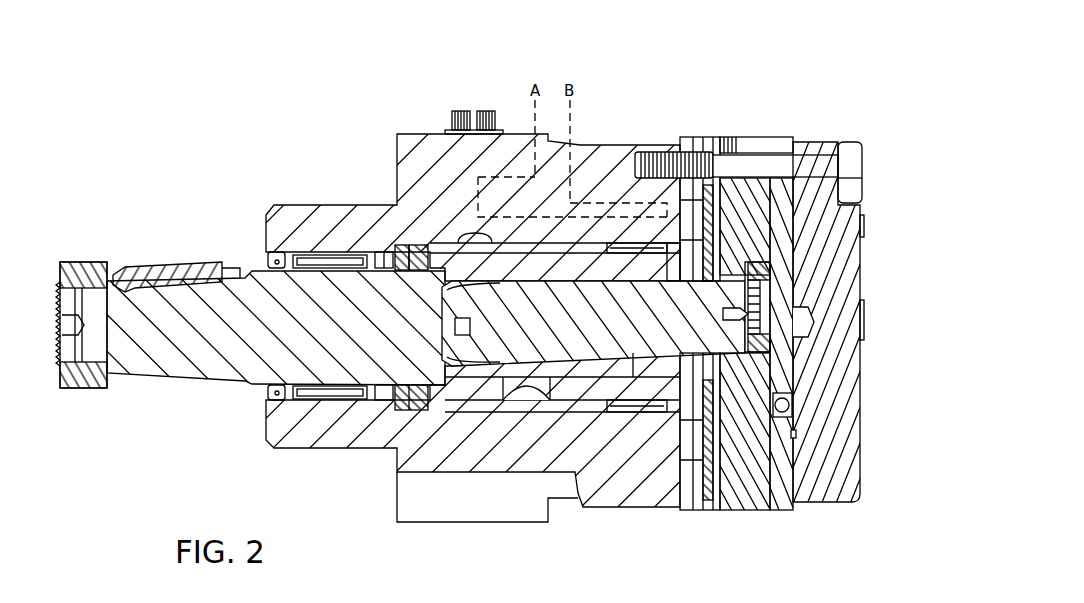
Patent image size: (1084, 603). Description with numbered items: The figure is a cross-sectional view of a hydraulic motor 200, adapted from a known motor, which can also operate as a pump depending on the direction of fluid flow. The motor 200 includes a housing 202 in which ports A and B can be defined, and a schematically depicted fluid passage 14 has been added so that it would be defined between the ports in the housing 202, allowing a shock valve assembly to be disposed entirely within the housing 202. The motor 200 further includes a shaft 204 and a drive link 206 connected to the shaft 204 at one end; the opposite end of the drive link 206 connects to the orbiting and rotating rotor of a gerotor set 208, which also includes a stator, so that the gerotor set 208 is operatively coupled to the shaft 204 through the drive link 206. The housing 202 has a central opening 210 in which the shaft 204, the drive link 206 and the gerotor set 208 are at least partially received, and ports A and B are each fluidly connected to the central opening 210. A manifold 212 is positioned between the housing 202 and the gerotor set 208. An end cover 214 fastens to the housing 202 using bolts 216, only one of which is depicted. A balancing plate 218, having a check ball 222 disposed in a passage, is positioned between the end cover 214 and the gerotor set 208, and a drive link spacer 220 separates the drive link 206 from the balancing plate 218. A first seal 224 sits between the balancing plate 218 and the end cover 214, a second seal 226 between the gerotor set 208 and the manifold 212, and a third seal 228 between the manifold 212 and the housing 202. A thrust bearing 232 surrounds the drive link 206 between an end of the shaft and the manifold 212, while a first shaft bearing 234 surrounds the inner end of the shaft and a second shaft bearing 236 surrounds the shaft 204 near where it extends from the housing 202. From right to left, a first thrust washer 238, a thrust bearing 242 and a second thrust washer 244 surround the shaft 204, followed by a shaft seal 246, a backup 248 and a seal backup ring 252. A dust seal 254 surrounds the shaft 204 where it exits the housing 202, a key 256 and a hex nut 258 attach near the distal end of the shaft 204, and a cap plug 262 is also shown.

The hydraulic motor 200 is at (612, 70).
The housing 202 is at (470, 523).
The shaft 204 is at (187, 382).
The drive link 206 is at (563, 392).
The gerotor set 208 is at (745, 512).
The central opening 210 is at (523, 405).
The manifold 212 is at (697, 512).
The end cover 214 is at (861, 360).
The bolt 216 is at (848, 142).
The balancing plate 218 is at (779, 152).
The drive link spacer 220 is at (745, 274).
The check ball 222 is at (790, 407).
The first seal 224 is at (796, 434).
The second seal 226 is at (730, 190).
The third seal 228 is at (700, 200).
The thrust bearing 232 is at (670, 412).
The first shaft bearing 234 is at (633, 400).
The second shaft bearing 236 is at (317, 257).
The first thrust washer 238 is at (425, 250).
The thrust bearing 242 is at (417, 248).
The second thrust washer 244 is at (403, 398).
The shaft seal 246 is at (387, 250).
The backup 248 is at (378, 398).
The seal backup ring 252 is at (370, 398).
The dust seal 254 is at (267, 260).
The key 256 is at (185, 262).
The hex nut 258 is at (100, 262).
The cap plug 262 is at (468, 111).
The fluid passage 14 is at (520, 216).